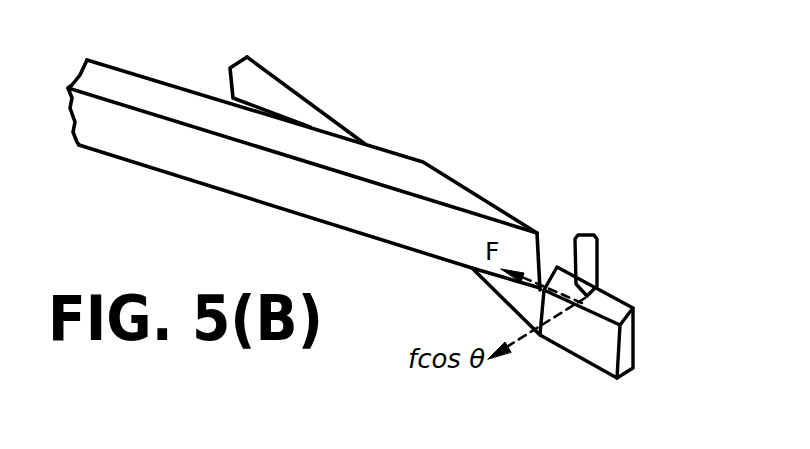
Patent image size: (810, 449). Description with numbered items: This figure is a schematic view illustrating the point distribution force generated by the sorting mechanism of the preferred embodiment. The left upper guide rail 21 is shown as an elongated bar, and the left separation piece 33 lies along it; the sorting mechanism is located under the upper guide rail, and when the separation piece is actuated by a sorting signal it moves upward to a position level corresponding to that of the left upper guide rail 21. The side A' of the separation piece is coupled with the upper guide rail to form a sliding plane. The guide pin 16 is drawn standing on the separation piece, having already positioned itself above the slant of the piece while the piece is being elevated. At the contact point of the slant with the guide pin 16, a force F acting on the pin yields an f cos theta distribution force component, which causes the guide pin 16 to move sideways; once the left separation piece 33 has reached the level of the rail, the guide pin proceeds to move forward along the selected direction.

The left upper guide rail 21 is at (167, 100).
The left separation piece 33 is at (320, 106).
The guide pin 16 is at (586, 261).
The side of the separation piece A' is at (586, 353).